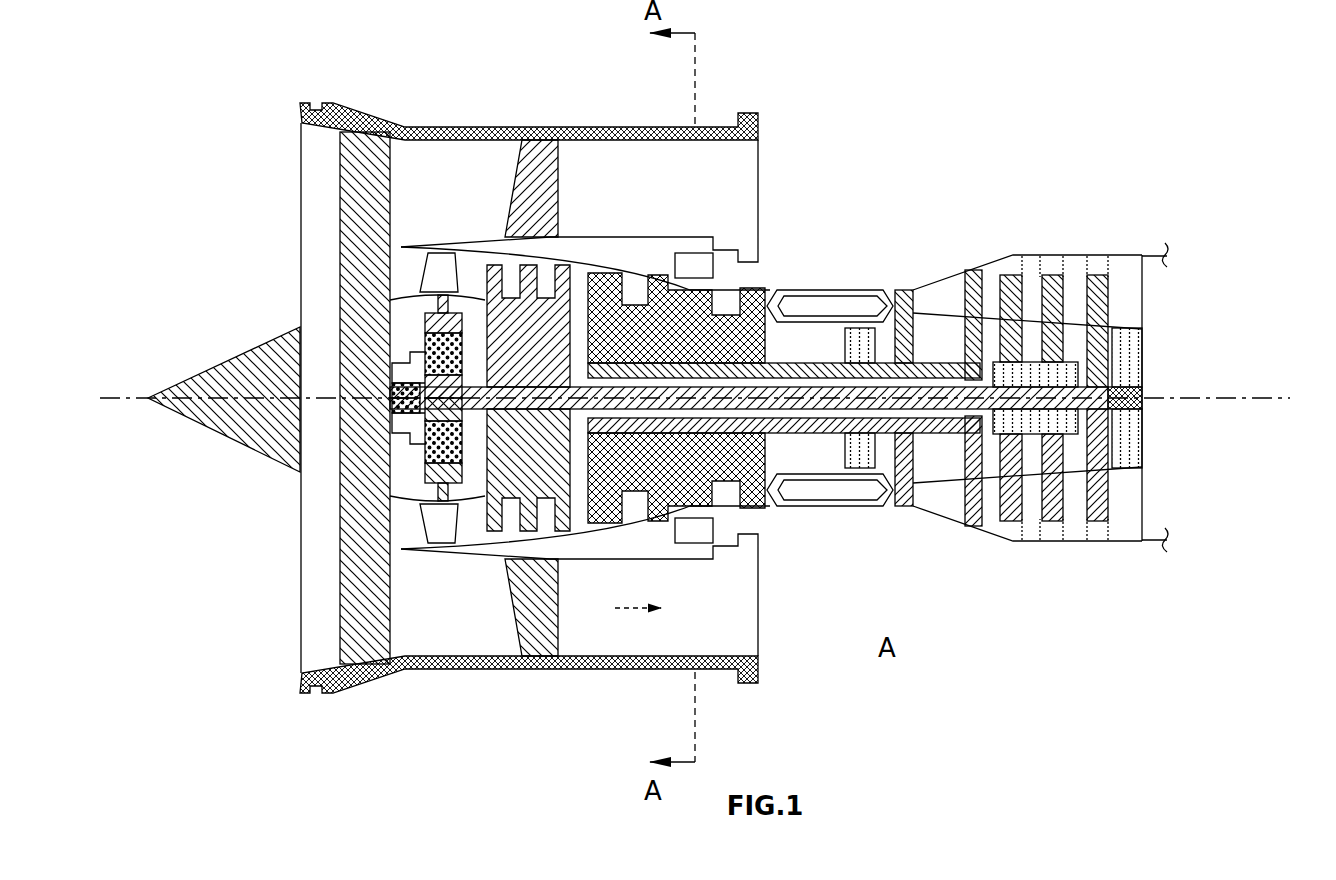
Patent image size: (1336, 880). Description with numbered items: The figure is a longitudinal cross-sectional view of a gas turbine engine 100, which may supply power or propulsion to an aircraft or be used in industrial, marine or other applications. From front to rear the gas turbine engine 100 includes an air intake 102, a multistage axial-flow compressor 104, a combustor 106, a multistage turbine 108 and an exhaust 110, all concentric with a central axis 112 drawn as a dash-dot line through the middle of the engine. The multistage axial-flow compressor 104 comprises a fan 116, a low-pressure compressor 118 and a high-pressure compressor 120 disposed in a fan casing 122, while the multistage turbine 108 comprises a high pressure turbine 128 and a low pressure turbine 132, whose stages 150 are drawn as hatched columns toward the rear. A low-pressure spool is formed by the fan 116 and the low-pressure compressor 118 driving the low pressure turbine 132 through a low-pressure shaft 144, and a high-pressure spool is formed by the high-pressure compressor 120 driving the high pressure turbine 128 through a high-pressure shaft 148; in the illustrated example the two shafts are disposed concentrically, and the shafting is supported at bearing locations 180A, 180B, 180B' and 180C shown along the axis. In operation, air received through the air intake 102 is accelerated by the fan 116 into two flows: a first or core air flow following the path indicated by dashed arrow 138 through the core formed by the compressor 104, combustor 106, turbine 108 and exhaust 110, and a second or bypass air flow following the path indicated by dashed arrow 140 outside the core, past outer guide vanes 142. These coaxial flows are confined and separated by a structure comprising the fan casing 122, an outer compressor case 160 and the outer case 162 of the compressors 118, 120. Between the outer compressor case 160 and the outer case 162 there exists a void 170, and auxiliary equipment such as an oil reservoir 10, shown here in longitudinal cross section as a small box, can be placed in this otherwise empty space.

The gas turbine engine 100 is at (1224, 182).
The air intake 102 is at (258, 536).
The multistage axial-flow compressor 104 is at (543, 740).
The combustor 106 is at (828, 497).
The multistage turbine 108 is at (1035, 655).
The exhaust 110 is at (1212, 513).
The central axis 112 is at (146, 392).
The fan 116 is at (340, 230).
The low-pressure compressor 118 is at (562, 548).
The high-pressure compressor 120 is at (746, 288).
The fan casing 122 is at (352, 106).
The high pressure turbine 128 is at (937, 260).
The low pressure turbine 132 is at (1074, 566).
The dashed arrow (first flow path) 138 is at (600, 197).
The dashed arrow (second flow path) 140 is at (612, 185).
The outer guide vanes 142 is at (537, 152).
The low-pressure shaft 144 is at (472, 560).
The high-pressure shaft 148 is at (793, 362).
The turbine stages 150 is at (1100, 268).
The outer compressor case 160 is at (700, 562).
The outer case 162 is at (793, 290).
The void 170 is at (590, 250).
The oil reservoir 10 is at (706, 255).
The first bearing 180A is at (410, 465).
The second bearing 180B is at (879, 359).
The second bearing alternate 180B' is at (1034, 314).
The third bearing 180C is at (1142, 338).